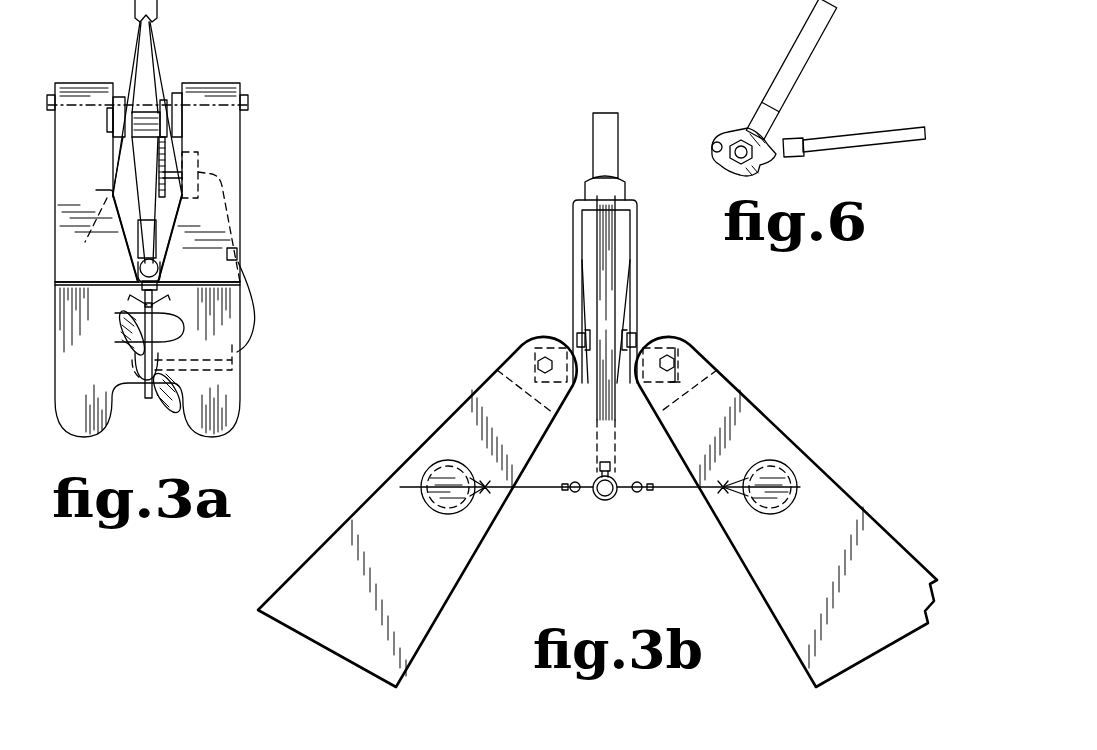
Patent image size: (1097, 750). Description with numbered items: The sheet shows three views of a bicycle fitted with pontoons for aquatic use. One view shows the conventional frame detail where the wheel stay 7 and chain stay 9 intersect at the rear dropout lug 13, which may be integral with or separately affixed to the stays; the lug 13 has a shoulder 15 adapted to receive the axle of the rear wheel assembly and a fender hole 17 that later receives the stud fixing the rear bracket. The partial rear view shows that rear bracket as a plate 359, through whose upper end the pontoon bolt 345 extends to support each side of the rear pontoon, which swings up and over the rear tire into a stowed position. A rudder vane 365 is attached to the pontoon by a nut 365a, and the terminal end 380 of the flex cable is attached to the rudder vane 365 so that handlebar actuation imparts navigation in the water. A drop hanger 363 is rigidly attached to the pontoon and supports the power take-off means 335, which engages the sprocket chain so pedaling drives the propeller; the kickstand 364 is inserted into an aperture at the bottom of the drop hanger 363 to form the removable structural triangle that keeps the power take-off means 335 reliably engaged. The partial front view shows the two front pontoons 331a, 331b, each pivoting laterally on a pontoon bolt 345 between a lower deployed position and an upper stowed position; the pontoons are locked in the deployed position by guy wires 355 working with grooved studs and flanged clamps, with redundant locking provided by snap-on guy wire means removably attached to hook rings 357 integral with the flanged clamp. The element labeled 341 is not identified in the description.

In FIG. 6, the wheel stay 7 is at (823, 33).
In FIG. 6, the chain stay 9 is at (848, 133).
In FIG. 6, the rear dropout lug 13 is at (735, 132).
In FIG. 6, the shoulder 15 is at (728, 163).
In FIG. 6, the fender hole 17 is at (712, 147).
In FIG. 3B, the pontoon 331a is at (828, 497).
In FIG. 3B, the pontoon 331b is at (377, 520).
In FIG. 3A, the power take-off means 335 is at (258, 338).
In FIG. 3B, the fork bracket 341 is at (570, 337).
In FIG. 3A, the pontoon bolt 345 is at (86, 100).
In FIG. 3B, the pontoon bolt 345 is at (672, 364).
In FIG. 3B, the guy wires 355 is at (535, 490).
In FIG. 3B, the hook rings 357 is at (590, 498).
In FIG. 3A, the plate 359 is at (180, 110).
In FIG. 3A, the drop hanger 363 is at (85, 242).
In FIG. 3A, the kickstand 364 is at (122, 173).
In FIG. 3A, the rudder vane 365 is at (147, 402).
In FIG. 3A, the nut 365a is at (162, 275).
In FIG. 3A, the terminal end 380 is at (155, 303).